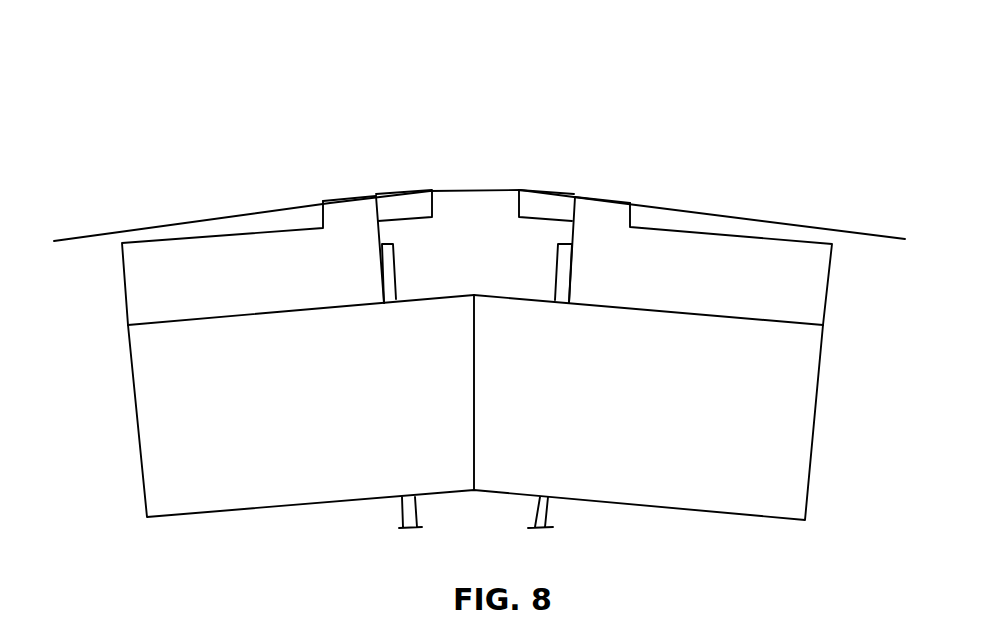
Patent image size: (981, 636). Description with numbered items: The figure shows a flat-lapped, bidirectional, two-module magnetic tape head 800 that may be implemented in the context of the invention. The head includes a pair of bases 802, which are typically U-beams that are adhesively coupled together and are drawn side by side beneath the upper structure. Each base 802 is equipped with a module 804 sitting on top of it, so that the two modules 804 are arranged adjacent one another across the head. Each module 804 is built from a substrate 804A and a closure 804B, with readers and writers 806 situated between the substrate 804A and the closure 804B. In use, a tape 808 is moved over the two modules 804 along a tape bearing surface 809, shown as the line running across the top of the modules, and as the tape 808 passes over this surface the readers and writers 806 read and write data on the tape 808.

The two-module magnetic tape head 800 is at (164, 138).
The base 802 is at (132, 395).
The module 804 is at (121, 291).
The substrate 804A is at (190, 267).
The closure 804B is at (518, 210).
The readers and writers 806 is at (374, 180).
The tape 808 is at (822, 232).
The tape bearing surface 809 is at (347, 182).